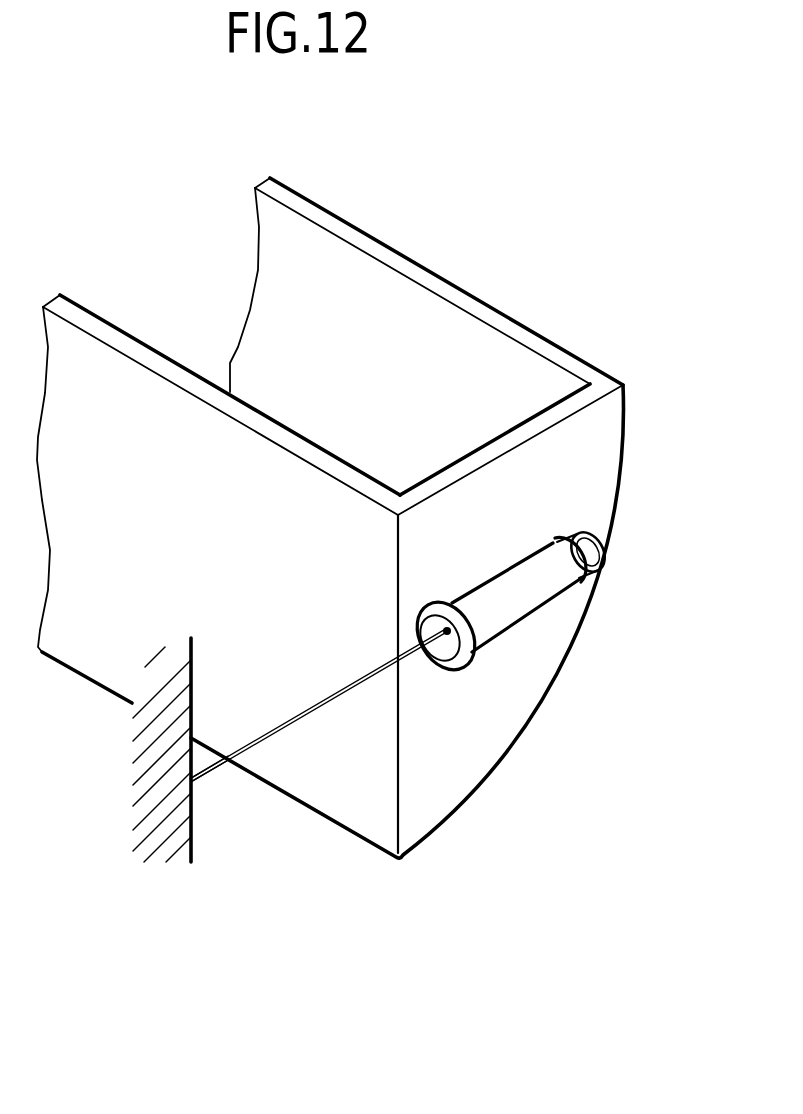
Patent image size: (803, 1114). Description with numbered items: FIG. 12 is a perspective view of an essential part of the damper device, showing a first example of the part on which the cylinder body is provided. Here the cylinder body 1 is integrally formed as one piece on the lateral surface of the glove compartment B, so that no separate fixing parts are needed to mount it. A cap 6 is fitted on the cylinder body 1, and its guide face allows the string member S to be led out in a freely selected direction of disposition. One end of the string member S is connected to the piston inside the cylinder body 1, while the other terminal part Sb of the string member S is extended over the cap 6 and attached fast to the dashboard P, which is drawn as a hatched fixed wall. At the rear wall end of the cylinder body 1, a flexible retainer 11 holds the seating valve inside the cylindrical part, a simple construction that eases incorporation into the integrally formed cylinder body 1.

The glove compartment B is at (595, 447).
The dashboard P is at (155, 820).
The string member S is at (300, 717).
The other terminal part of the string member Sb is at (210, 777).
The cap 6 is at (451, 670).
The cylinder body 1 is at (535, 603).
The flexible retainer 11 is at (606, 552).